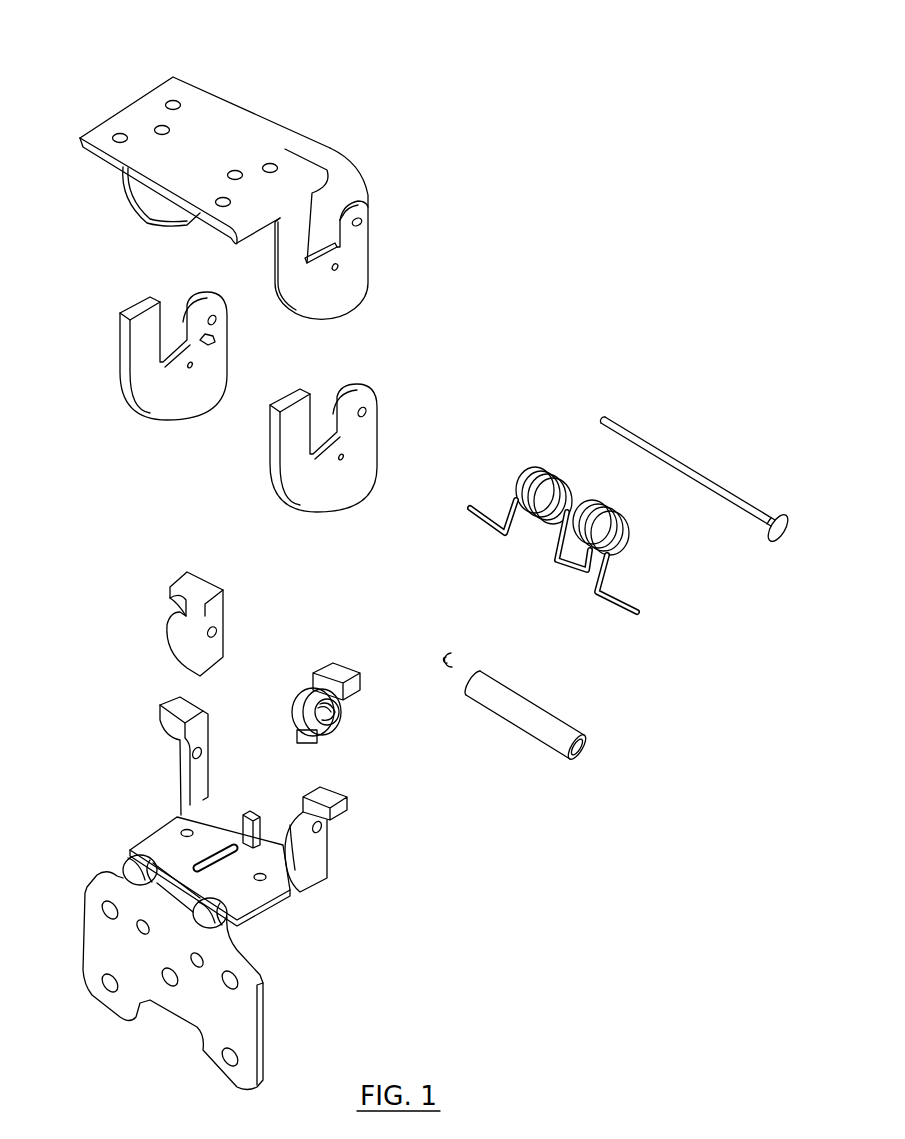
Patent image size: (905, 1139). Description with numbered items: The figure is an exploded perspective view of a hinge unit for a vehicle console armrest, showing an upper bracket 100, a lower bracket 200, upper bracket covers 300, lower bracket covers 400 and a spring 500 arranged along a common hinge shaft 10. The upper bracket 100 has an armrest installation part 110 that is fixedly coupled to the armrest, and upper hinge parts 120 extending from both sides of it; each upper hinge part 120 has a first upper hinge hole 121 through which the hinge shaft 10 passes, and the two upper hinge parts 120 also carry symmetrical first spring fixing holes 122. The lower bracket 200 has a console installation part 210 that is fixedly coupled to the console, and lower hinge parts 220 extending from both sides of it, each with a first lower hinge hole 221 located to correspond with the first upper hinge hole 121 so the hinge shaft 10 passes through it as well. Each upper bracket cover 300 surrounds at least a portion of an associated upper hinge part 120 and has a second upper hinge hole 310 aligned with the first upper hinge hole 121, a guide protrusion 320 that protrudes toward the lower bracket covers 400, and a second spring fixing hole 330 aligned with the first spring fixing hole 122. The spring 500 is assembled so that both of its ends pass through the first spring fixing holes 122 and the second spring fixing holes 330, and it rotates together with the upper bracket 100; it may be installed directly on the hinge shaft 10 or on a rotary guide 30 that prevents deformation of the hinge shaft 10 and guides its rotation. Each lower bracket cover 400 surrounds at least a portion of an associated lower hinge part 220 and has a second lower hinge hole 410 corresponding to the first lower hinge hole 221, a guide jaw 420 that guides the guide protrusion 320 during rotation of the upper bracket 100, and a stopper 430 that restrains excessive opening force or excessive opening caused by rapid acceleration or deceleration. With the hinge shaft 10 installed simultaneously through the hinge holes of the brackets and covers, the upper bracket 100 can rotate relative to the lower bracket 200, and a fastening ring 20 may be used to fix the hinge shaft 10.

The hinge shaft 10 is at (680, 467).
The fastening ring 20 is at (453, 660).
The rotary guide 30 is at (537, 710).
The upper bracket 100 is at (327, 33).
The armrest installation part 110 is at (205, 124).
The upper hinge part 120 is at (363, 182).
The first upper hinge hole 121 is at (380, 220).
The first spring fixing hole 122 is at (340, 268).
The lower bracket 200 is at (423, 913).
The console installation part 210 is at (237, 1017).
The lower hinge part 220 is at (310, 850).
The first lower hinge hole 221 is at (327, 823).
The upper bracket cover 300 is at (273, 437).
The second upper hinge hole 310 is at (150, 298).
The guide protrusion 320 is at (213, 340).
The second spring fixing hole 330 is at (347, 457).
The lower bracket cover 400 is at (290, 703).
The second lower hinge hole 410 is at (220, 630).
The guide jaw 420 is at (327, 730).
The stopper 430 is at (343, 670).
The spring 500 is at (607, 570).